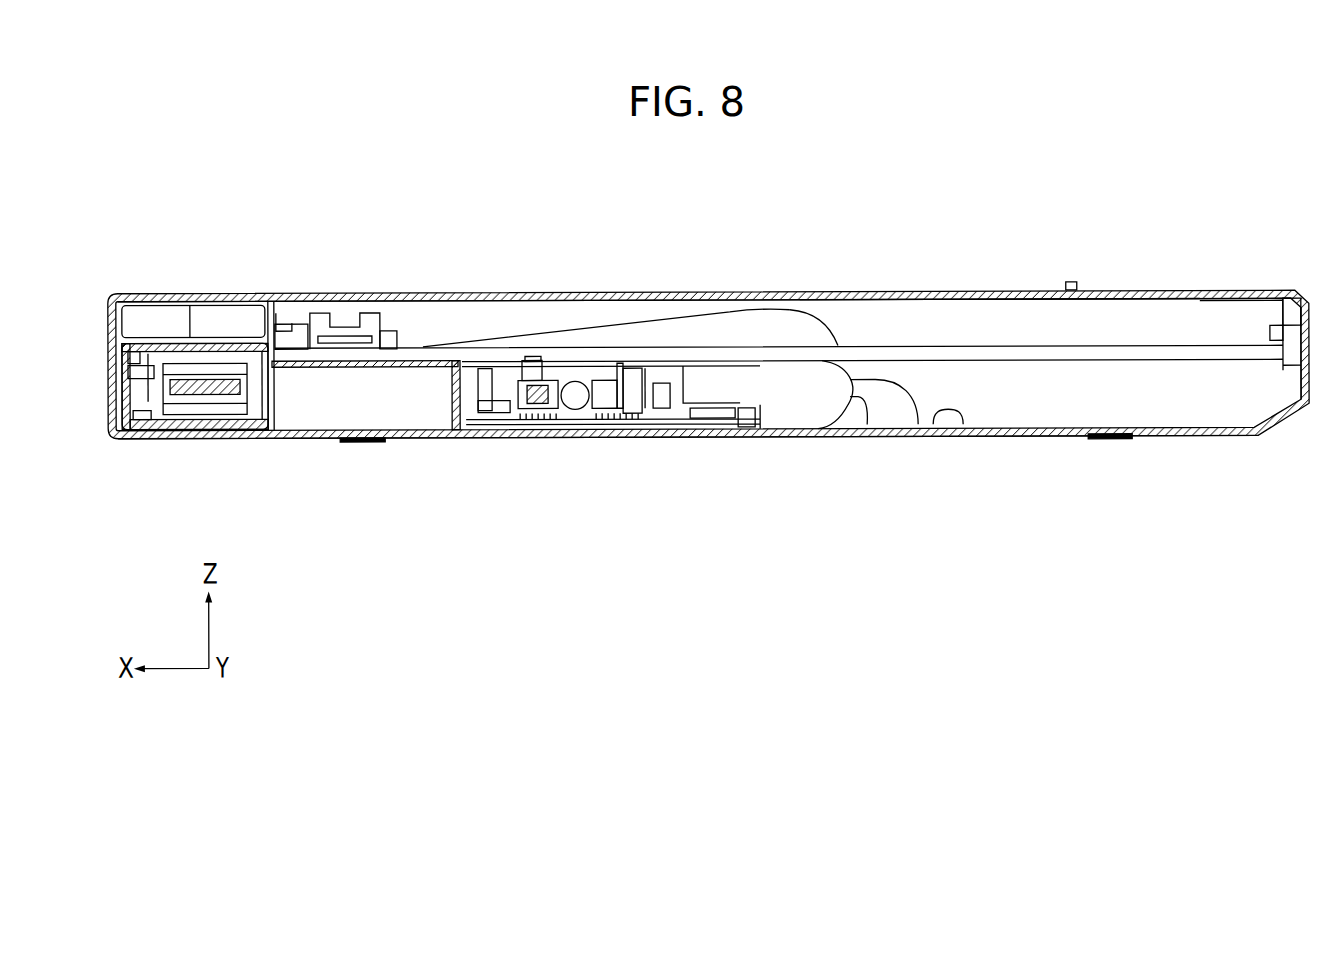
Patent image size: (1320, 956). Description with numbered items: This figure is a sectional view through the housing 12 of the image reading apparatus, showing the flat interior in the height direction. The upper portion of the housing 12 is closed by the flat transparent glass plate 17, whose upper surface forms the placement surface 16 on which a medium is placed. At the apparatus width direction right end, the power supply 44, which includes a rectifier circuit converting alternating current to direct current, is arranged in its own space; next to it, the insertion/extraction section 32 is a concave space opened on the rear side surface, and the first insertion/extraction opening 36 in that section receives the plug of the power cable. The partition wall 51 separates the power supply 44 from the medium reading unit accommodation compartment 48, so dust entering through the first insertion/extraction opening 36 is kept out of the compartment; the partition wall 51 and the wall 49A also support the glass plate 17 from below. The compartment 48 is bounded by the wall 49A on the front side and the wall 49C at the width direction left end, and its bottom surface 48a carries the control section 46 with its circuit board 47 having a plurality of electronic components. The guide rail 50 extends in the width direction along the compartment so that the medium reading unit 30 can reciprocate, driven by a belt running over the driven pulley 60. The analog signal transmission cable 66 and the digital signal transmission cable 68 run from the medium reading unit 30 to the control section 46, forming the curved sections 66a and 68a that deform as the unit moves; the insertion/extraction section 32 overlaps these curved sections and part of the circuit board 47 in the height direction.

The housing 12 is at (1155, 438).
The placement surface 16 is at (917, 292).
The glass plate 17 is at (865, 292).
The medium reading unit 30 is at (391, 322).
The insertion/extraction section 32 is at (362, 403).
The first insertion/extraction opening 36 is at (279, 387).
The power supply 44 is at (148, 398).
The control section 46 is at (685, 383).
The circuit board 47 is at (577, 420).
The medium reading unit accommodation compartment 48 is at (1155, 335).
The bottom surface 48a is at (962, 428).
The wall 49A is at (948, 325).
The wall 49C is at (1298, 358).
The guide rail 50 is at (1055, 345).
The partition wall 51 is at (262, 323).
The driven pulley 60 is at (1270, 337).
The analog signal transmission cable 66 is at (727, 313).
The curved section 66a is at (823, 338).
The digital signal transmission cable 68 is at (851, 427).
The curved section 68a is at (915, 426).